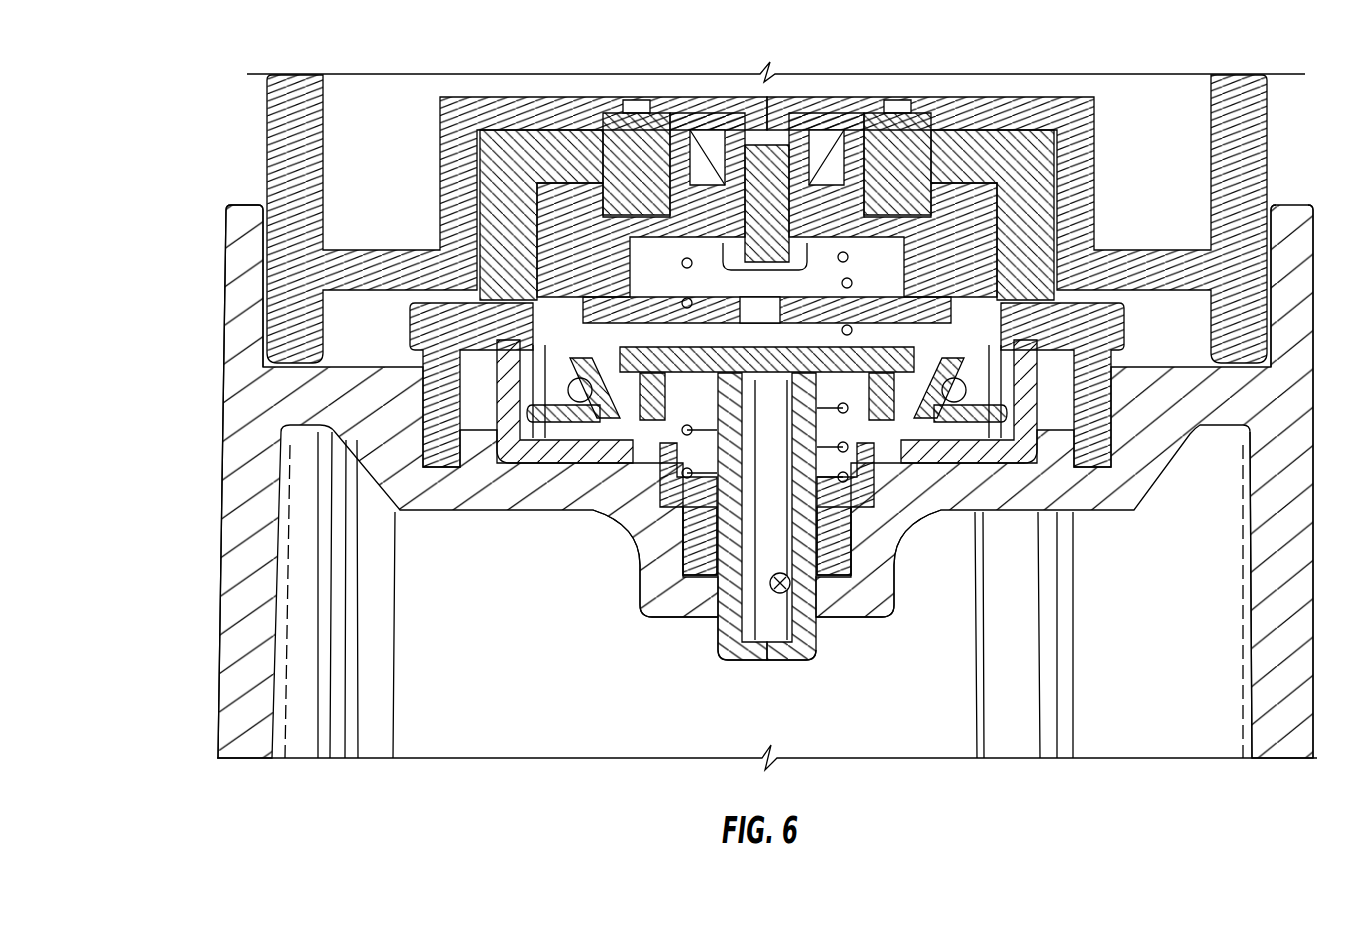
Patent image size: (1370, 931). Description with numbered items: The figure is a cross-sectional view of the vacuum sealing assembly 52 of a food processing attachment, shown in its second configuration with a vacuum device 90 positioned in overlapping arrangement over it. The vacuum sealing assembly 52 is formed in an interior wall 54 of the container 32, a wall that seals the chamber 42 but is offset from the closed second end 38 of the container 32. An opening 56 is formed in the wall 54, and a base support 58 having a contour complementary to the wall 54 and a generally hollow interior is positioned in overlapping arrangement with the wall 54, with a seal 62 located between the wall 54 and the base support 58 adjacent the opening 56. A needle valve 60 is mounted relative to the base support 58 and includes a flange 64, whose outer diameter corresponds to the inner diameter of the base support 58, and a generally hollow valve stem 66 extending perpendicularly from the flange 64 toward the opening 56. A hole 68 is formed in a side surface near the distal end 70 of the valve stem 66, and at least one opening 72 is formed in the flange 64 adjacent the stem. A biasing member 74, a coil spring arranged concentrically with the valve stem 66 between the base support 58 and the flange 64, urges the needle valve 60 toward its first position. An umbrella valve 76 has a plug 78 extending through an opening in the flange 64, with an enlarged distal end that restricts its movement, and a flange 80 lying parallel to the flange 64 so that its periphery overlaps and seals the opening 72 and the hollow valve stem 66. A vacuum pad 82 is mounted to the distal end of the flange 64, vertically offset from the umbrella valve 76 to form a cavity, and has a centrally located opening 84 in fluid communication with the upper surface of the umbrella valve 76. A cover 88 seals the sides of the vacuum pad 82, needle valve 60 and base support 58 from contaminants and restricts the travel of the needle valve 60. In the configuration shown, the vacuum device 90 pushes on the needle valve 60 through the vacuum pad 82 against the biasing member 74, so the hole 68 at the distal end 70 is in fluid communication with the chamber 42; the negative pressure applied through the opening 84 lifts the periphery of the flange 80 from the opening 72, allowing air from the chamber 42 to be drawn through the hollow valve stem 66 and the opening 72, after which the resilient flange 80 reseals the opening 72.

The container 32 is at (147, 252).
The closed second end 38 is at (1290, 205).
The chamber 42 is at (1162, 668).
The vacuum sealing assembly 52 is at (950, 385).
The interior wall 54 is at (340, 443).
The opening 56 is at (712, 645).
The base support 58 is at (537, 453).
The needle valve 60 is at (578, 347).
The seal 62 is at (648, 565).
The flange 64 is at (622, 387).
The valve stem 66 is at (805, 510).
The hole 68 is at (793, 597).
The distal end 70 is at (790, 657).
The opening 72 is at (905, 383).
The biasing member 74 is at (685, 562).
The umbrella valve 76 is at (709, 363).
The plug 78 is at (660, 455).
The flange 80 is at (870, 350).
The vacuum pad 82 is at (973, 343).
The opening 84 is at (763, 297).
The cover 88 is at (465, 320).
The vacuum device 90 is at (537, 100).